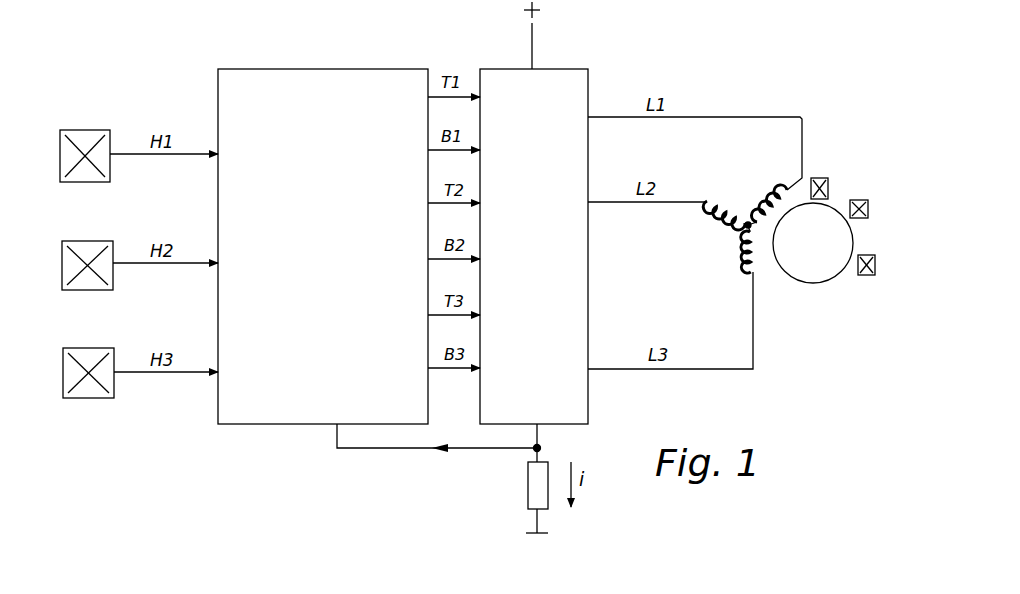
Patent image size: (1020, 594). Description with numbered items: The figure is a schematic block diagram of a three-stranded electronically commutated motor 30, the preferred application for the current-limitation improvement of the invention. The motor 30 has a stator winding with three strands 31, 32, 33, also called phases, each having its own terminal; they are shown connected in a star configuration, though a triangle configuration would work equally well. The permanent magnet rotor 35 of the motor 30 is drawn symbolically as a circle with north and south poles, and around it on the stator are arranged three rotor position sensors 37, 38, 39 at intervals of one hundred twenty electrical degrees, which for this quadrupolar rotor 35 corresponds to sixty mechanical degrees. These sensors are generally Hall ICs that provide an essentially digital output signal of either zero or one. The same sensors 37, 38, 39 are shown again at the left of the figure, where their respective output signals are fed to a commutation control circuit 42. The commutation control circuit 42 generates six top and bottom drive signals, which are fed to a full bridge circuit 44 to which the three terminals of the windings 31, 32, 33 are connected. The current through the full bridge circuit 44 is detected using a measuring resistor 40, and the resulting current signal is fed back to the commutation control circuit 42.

The Electronically Commutated Motor 30 is at (878, 143).
The stator winding strand 31 is at (768, 189).
The stator winding strand 32 is at (706, 218).
The stator winding strand 33 is at (741, 272).
The permanent magnet rotor 35 is at (819, 283).
The rotor position sensor 37 is at (87, 130).
The rotor position sensor 38 is at (87, 241).
The rotor position sensor 39 is at (85, 348).
The measuring resistor 40 is at (528, 490).
The commutation control circuit 42 is at (345, 274).
The full bridge circuit 44 is at (558, 268).